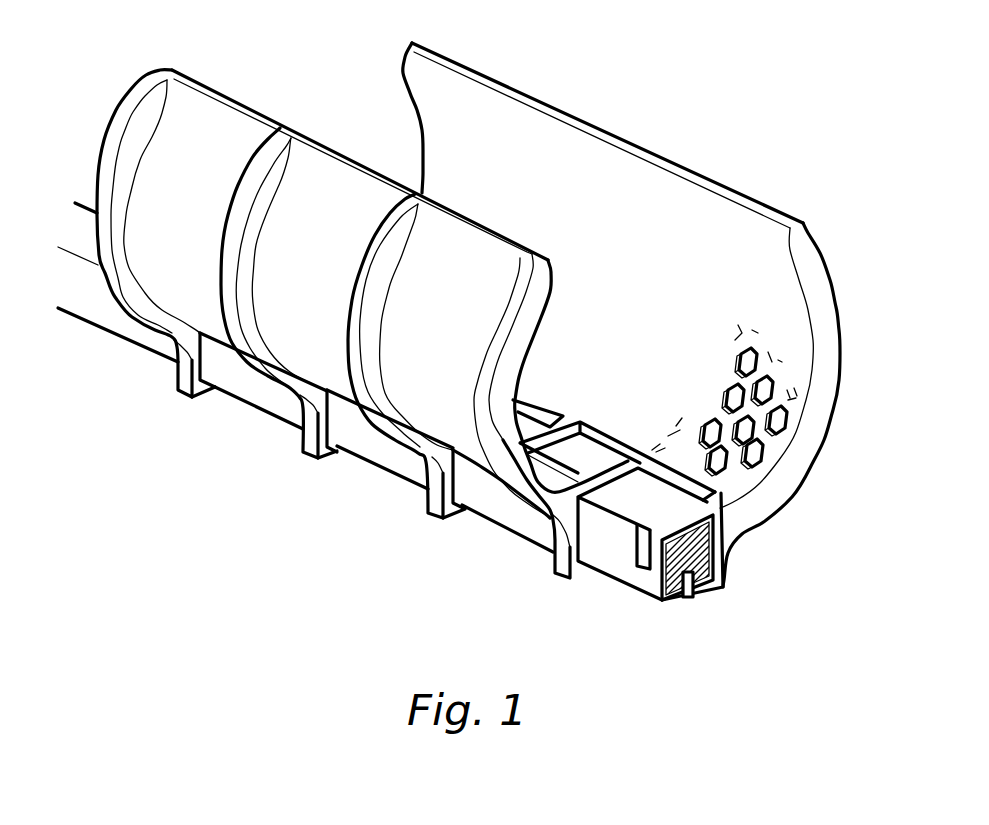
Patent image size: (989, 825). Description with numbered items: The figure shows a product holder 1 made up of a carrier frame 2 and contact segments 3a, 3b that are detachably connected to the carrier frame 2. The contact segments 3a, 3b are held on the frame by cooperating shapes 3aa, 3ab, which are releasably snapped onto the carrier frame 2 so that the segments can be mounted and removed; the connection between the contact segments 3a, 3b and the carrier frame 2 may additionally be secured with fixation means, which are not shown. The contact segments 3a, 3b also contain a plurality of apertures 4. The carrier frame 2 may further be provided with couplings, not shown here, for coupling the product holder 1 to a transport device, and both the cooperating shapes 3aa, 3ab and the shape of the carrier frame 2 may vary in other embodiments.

The product holder 1 is at (808, 88).
The carrier frame 2 is at (617, 563).
The contact segment 3a is at (592, 167).
The cooperating shape 3aa is at (688, 580).
The cooperating shape 3ab is at (643, 555).
The contact segment 3b is at (337, 187).
The apertures 4 is at (710, 433).